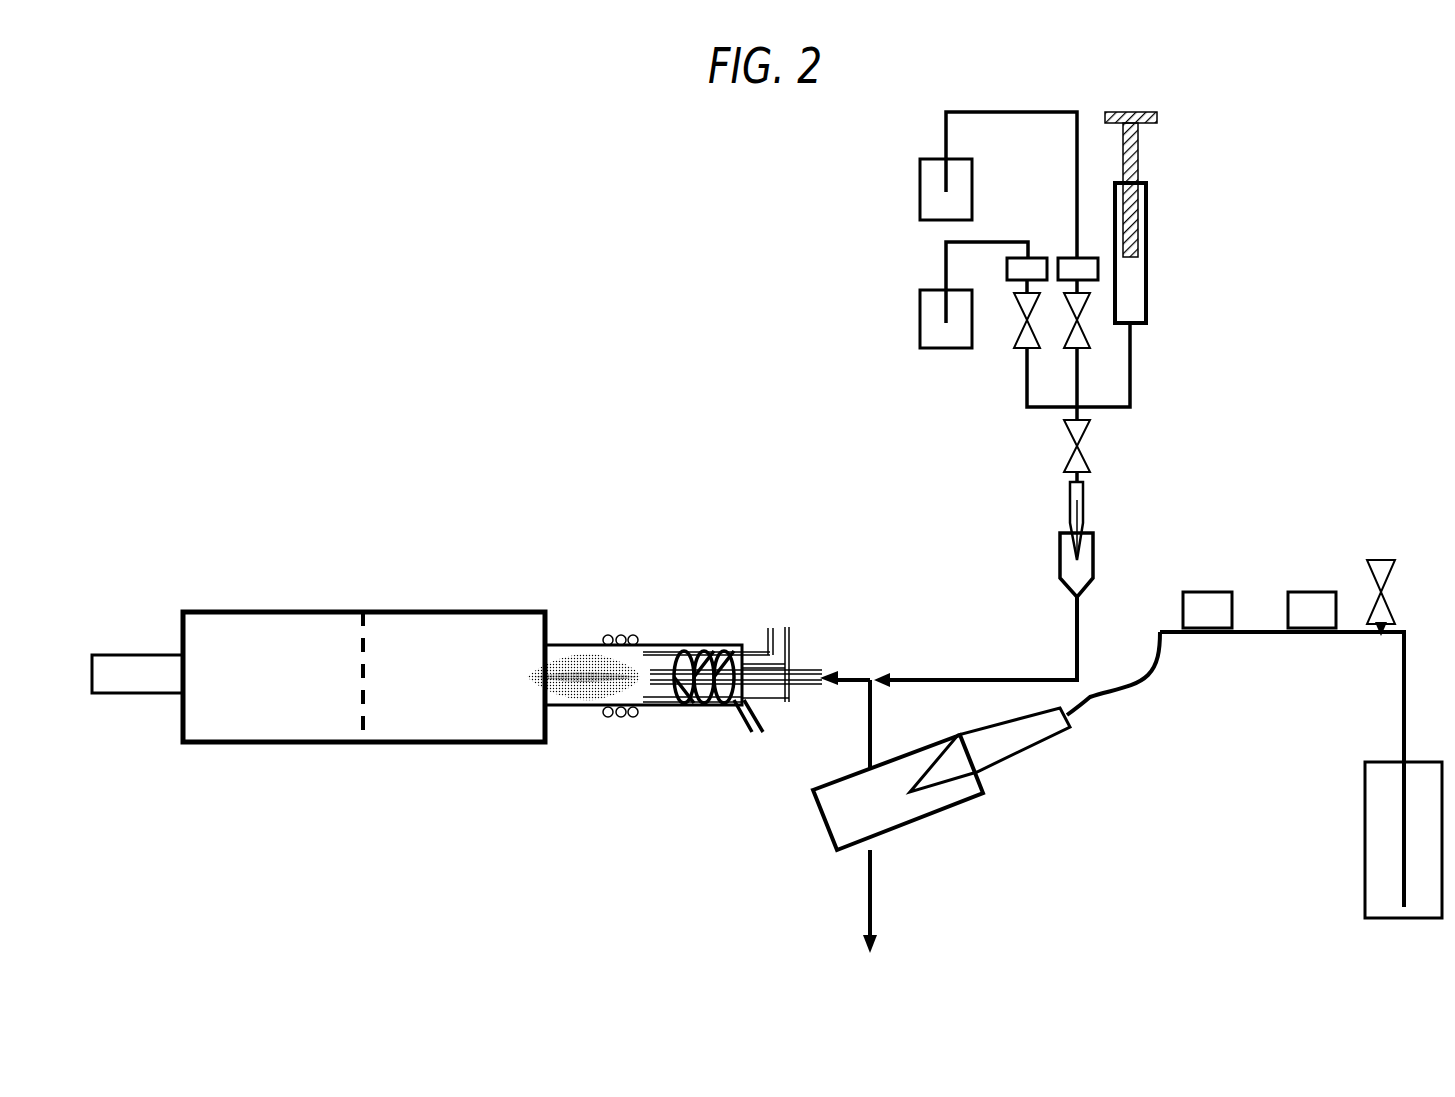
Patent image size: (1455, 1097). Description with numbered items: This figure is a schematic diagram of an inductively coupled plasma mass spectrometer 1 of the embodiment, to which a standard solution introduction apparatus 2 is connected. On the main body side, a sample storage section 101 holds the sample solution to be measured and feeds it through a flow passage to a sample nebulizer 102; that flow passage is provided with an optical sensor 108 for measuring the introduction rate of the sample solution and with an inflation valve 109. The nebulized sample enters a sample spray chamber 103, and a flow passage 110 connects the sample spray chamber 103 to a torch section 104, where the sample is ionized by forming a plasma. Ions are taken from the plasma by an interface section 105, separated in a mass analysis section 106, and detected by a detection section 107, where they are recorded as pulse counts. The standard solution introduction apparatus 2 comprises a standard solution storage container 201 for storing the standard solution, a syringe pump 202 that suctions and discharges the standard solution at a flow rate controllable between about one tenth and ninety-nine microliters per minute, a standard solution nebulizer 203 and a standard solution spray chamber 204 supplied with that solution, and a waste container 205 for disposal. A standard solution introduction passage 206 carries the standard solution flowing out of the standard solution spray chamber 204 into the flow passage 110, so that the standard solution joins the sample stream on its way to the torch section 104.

The analysis apparatus 1 is at (603, 823).
The standard solution introduction apparatus 2 is at (822, 208).
The sample storage section 101 is at (1365, 824).
The sample nebulizer 102 is at (1043, 742).
The sample spray chamber 103 is at (898, 825).
The torch section 104 is at (655, 645).
The interface section 105 is at (445, 612).
The mass analysis section 106 is at (232, 612).
The detection section 107 is at (105, 653).
The optical sensor 108 is at (1222, 590).
The inflation valve 109 is at (1388, 560).
The flow passage 110 is at (868, 715).
The standard solution storage container 201 is at (920, 170).
The syringe pump 202 is at (1147, 230).
The standard solution nebulizer 203 is at (1085, 497).
The standard solution spray chamber 204 is at (1095, 563).
The waste container 205 is at (920, 312).
The standard solution introduction passage 206 is at (933, 680).